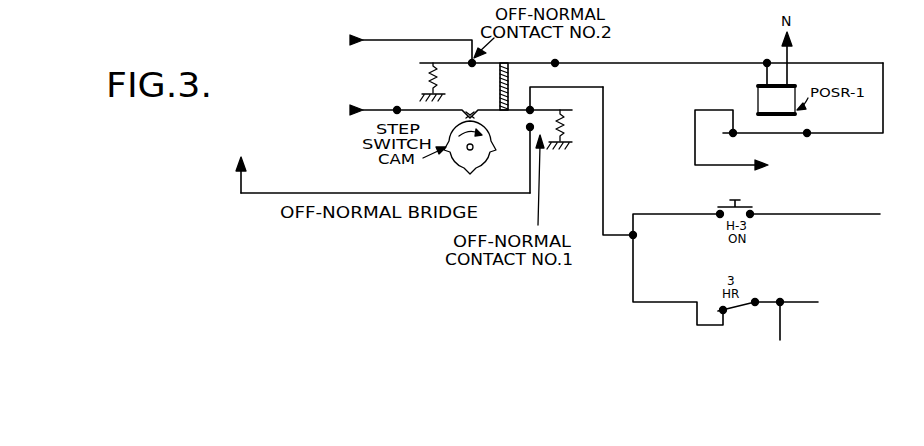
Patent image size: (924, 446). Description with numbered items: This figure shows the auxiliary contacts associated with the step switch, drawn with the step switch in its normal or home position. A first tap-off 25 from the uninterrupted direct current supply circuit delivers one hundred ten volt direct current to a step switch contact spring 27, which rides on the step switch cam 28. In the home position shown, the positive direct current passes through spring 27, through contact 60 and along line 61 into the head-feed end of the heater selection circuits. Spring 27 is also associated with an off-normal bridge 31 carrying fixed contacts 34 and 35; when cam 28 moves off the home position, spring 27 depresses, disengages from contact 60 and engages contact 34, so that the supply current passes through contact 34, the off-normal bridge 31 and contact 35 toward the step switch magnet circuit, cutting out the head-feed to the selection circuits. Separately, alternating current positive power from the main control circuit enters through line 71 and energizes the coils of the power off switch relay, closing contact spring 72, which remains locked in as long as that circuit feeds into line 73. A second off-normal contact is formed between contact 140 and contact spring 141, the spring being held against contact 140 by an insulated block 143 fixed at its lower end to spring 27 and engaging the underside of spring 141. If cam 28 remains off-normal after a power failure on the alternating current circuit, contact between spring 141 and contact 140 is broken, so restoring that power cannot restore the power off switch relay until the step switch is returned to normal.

The line 71 is at (402, 38).
The contact 140 is at (469, 59).
The contact spring 141 is at (547, 65).
The insulated block 143 is at (500, 82).
The tap-off 25 is at (370, 108).
The step switch cam 28 is at (466, 162).
The contact 60 is at (534, 108).
The step switch contact spring 27 is at (570, 129).
The fixed contact 34 is at (530, 138).
The off-normal bridge 31 is at (296, 191).
The fixed contact 35 is at (239, 181).
The line 61 is at (605, 174).
The contact spring 72 is at (794, 135).
The line 73 is at (738, 167).